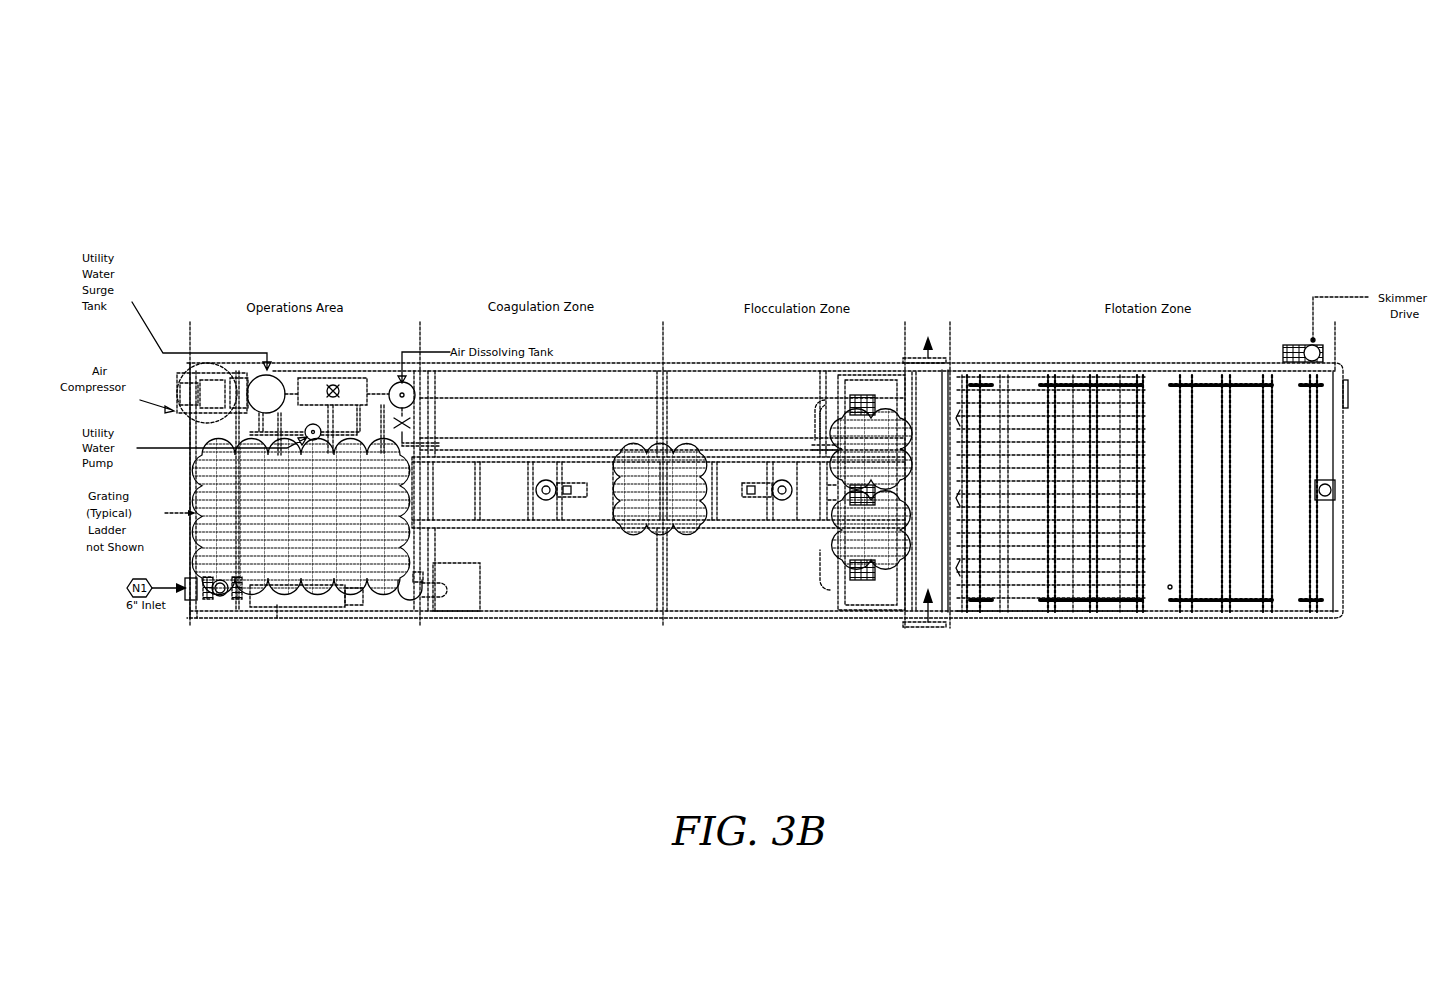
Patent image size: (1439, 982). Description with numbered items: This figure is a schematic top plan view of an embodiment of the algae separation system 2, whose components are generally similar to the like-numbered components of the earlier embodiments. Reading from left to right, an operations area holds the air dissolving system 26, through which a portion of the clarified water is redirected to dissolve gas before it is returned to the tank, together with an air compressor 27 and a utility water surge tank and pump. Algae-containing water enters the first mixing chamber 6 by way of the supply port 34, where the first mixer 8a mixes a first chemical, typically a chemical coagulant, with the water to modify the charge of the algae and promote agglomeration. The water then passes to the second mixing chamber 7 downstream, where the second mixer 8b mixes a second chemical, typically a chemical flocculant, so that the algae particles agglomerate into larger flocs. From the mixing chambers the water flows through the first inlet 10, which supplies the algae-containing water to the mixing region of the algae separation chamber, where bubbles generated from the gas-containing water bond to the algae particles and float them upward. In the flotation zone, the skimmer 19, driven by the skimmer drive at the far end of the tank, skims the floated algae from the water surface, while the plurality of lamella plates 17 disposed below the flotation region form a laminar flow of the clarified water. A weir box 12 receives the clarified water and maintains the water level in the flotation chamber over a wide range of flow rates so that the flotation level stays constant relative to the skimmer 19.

The algae separation system 2 is at (198, 112).
The air compressor 27 is at (233, 393).
The air dissolving system 26 is at (195, 466).
The supply port 34 is at (433, 592).
The first mixing chamber 6 is at (604, 582).
The second mixing chamber 7 is at (730, 582).
The first mixer 8a is at (570, 520).
The second mixer 8b is at (745, 520).
The first inlet 10 is at (903, 505).
The weir box 12 is at (925, 622).
The lamella plates 17 is at (1075, 572).
The skimmer 19 is at (1282, 612).